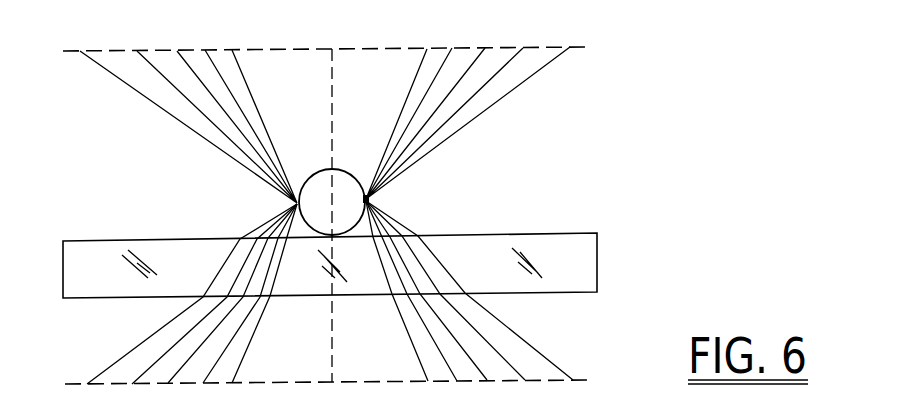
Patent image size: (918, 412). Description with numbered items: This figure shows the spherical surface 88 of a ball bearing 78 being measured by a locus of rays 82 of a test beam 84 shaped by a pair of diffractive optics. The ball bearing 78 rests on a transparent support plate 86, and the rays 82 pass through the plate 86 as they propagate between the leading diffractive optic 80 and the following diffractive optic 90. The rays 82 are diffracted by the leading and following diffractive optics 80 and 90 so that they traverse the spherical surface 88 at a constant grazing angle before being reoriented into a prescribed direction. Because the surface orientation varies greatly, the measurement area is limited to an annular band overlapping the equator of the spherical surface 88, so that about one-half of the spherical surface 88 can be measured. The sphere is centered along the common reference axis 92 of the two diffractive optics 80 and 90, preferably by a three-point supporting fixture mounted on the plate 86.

The ball bearing 78 is at (346, 178).
The leading diffractive optic 80 is at (73, 384).
The rays 82 is at (477, 93).
The test beam 84 is at (540, 343).
The transparent support plate 86 is at (165, 247).
The spherical surface 88 is at (370, 198).
The following diffractive optic 90 is at (161, 50).
The common reference axis 92 is at (333, 322).